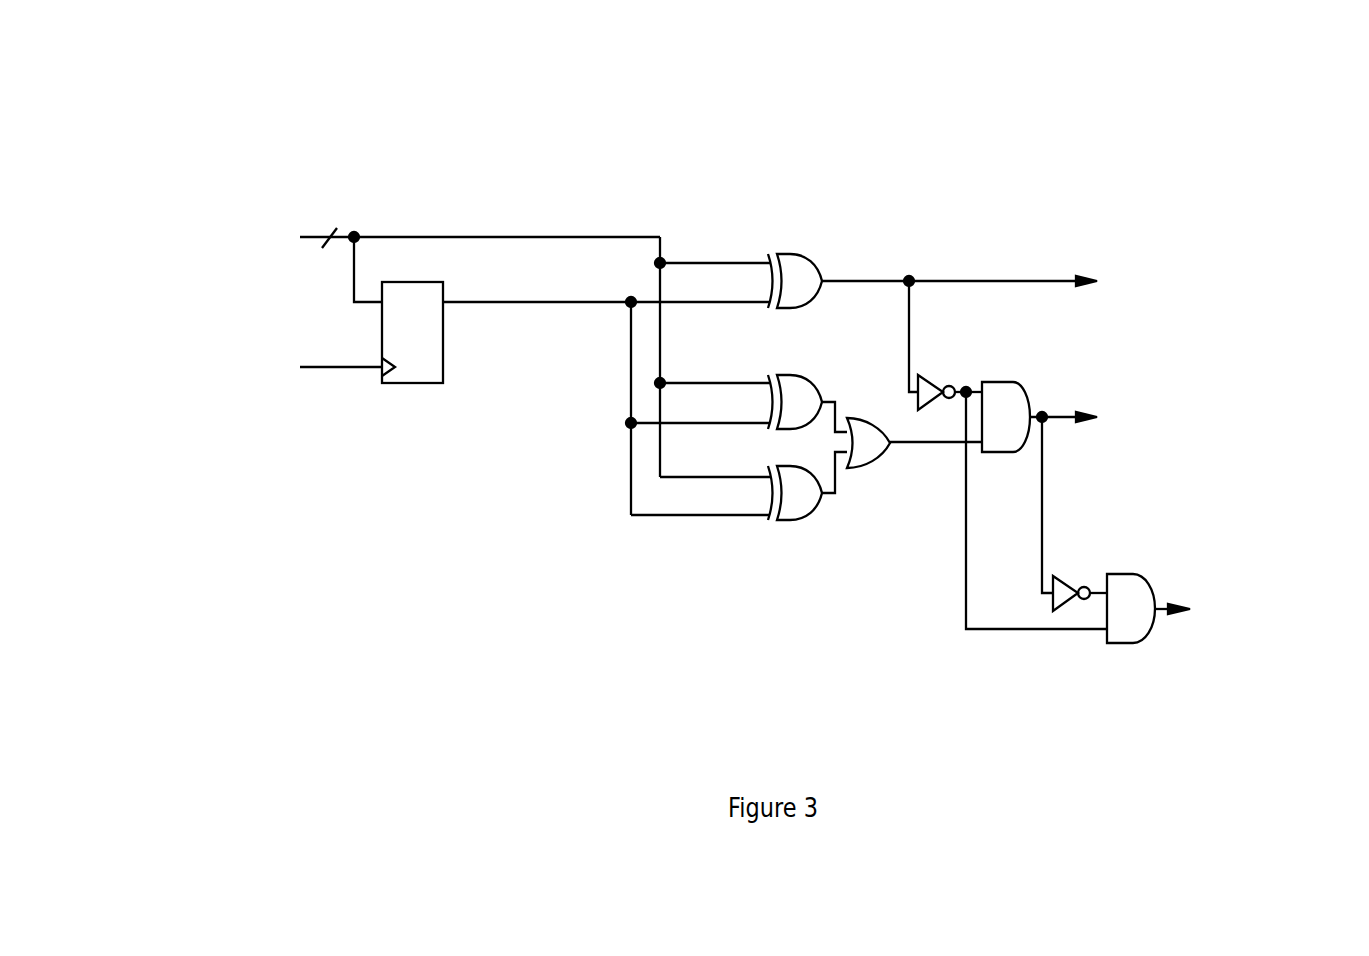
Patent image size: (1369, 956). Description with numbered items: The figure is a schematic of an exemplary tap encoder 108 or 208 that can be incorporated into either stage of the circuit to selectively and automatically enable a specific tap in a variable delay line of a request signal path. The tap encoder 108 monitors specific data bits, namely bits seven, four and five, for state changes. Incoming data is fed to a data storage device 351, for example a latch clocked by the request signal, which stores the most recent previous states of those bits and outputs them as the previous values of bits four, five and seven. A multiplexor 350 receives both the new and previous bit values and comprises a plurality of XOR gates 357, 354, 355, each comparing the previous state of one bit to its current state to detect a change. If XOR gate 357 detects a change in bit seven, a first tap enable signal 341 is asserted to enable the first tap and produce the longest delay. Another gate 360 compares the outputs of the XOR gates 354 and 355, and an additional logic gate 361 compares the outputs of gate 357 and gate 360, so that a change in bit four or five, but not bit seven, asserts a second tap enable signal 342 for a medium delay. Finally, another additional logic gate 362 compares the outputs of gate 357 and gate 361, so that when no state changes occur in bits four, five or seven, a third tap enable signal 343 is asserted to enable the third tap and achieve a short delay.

The tap encoder 108 is at (141, 110).
The tap encoder 208 is at (733, 398).
The multiplexor 350 is at (1053, 165).
The data storage device 351 is at (413, 383).
The XOR gate 354 is at (800, 373).
The XOR gate 355 is at (785, 522).
The XOR gate 357 is at (802, 253).
The XOR gate 360 is at (858, 468).
The additional logic gate 361 is at (1012, 452).
The additional logic gate 362 is at (1133, 643).
The first tap enable signal 341 is at (1153, 258).
The second tap enable signal 342 is at (1180, 405).
The third tap enable signal 343 is at (1237, 593).